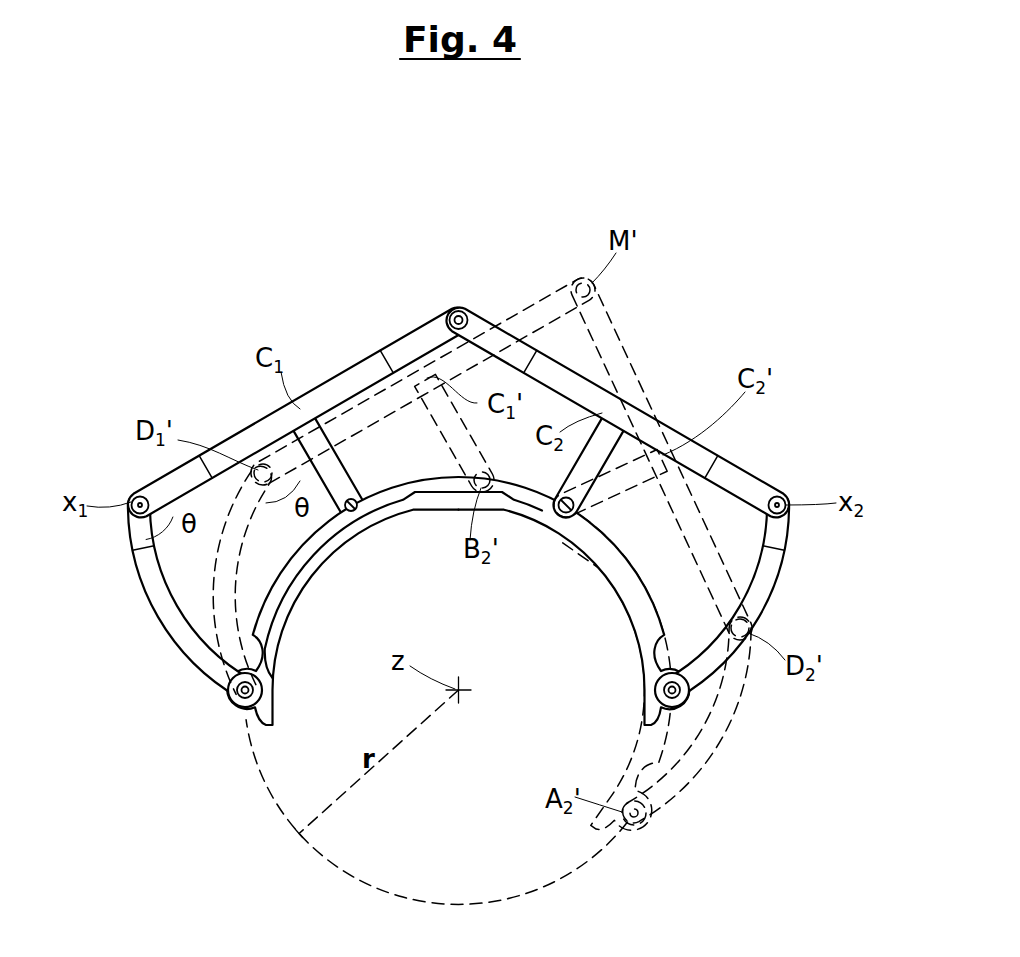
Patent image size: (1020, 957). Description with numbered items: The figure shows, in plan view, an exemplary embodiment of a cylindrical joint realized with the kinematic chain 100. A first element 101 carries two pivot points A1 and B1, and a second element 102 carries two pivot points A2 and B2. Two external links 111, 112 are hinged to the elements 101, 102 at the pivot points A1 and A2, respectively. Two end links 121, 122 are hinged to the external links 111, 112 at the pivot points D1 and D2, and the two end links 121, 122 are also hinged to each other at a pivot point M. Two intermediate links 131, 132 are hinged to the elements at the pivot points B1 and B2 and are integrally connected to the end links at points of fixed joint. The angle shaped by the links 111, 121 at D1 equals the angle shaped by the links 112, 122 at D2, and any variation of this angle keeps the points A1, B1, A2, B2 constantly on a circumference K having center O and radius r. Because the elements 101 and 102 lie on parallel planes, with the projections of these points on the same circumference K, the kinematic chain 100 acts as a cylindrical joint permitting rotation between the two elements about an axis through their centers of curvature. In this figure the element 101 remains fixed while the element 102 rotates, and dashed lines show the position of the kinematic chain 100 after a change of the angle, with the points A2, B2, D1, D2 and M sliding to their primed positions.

The kinematic chain 100 is at (222, 225).
The first element 101 is at (307, 570).
The second element 102 is at (637, 641).
The external link 111 is at (163, 587).
The external link 112 is at (757, 587).
The end link 121 is at (258, 432).
The end link 122 is at (730, 473).
The intermediate link 131 is at (613, 457).
The intermediate link 132 is at (335, 467).
The pivot point M is at (468, 312).
The pivot point D1 is at (133, 513).
The pivot point D2 is at (785, 514).
The pivot point B1 is at (563, 522).
The pivot point B2 is at (358, 520).
The pivot point A1 is at (246, 703).
The pivot point A2 is at (663, 703).
The center O is at (463, 700).
The circumference K is at (592, 862).